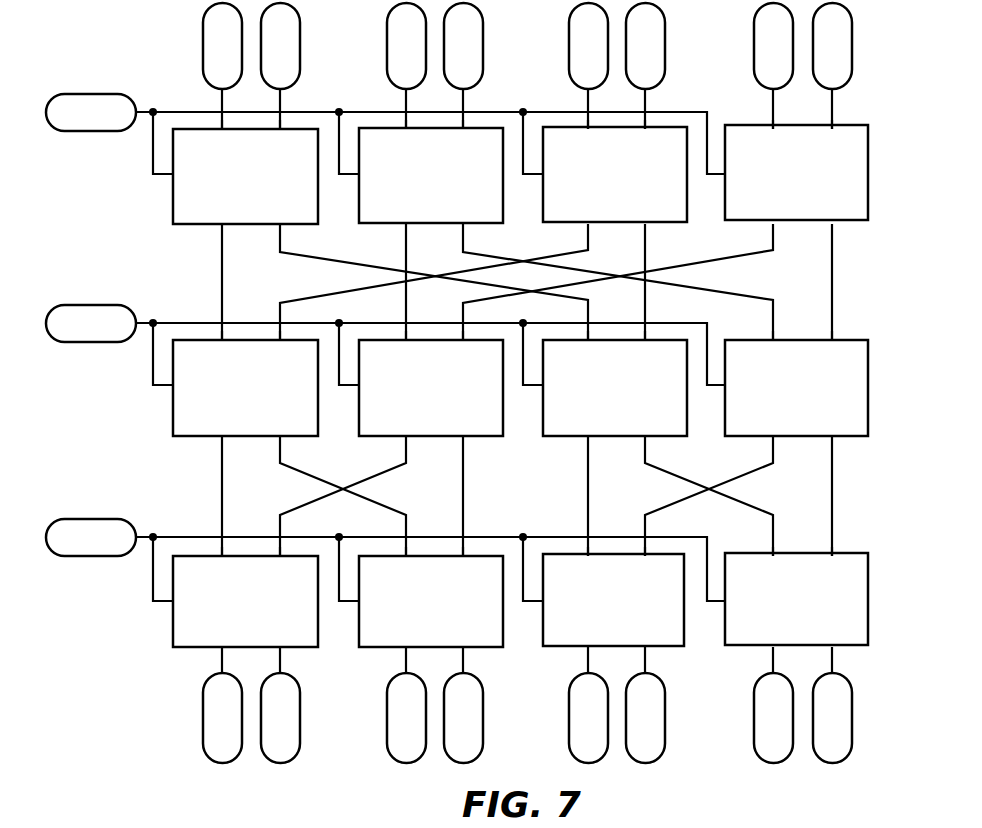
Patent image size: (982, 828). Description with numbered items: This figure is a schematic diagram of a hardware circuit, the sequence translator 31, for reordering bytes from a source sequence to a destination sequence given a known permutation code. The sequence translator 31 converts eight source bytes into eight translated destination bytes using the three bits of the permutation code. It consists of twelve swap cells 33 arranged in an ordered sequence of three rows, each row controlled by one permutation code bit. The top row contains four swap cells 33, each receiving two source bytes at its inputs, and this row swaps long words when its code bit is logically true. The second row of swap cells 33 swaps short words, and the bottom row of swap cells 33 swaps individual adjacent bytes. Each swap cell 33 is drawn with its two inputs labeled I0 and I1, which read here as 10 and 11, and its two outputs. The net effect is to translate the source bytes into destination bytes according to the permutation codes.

The sequence translator 31 is at (113, 724).
The swap cell 33 is at (489, 398).
The swap cell input I0 10 is at (496, 352).
The swap cell input I1 11 is at (555, 352).